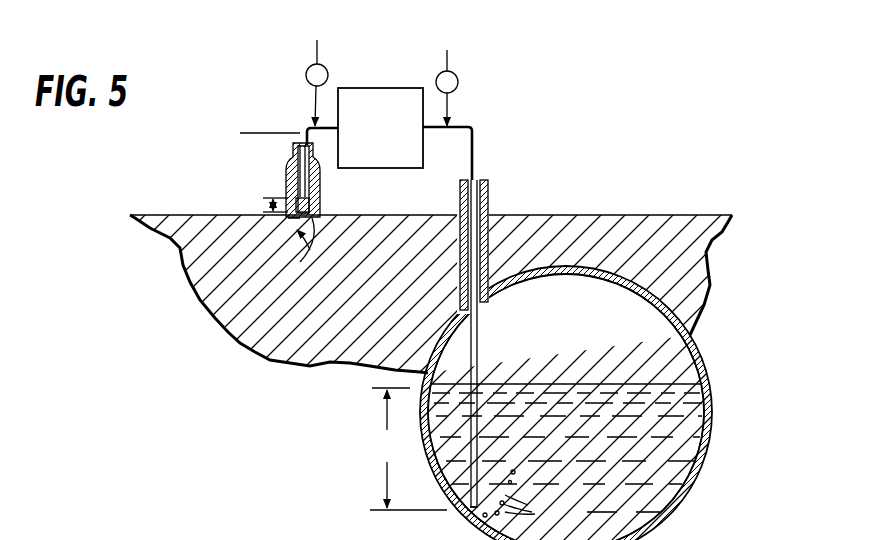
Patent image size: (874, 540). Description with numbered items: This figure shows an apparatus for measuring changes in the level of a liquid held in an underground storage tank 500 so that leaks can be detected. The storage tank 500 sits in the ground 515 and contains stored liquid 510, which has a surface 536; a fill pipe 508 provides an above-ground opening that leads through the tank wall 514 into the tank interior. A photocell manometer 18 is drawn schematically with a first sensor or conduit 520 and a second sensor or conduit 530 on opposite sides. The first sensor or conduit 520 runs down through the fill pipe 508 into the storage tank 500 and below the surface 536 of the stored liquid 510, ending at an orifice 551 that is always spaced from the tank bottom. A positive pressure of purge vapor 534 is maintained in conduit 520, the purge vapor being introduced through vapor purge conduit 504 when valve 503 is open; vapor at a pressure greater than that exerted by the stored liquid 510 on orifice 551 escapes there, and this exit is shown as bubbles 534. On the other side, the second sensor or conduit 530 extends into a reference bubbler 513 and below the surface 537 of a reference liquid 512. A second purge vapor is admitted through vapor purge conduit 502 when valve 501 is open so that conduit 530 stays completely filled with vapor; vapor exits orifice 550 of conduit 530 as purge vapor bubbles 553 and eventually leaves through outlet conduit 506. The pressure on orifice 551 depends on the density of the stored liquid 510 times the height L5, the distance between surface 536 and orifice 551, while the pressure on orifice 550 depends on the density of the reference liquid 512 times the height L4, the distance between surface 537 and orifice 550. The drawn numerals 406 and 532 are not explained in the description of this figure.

The photocell manometer 18 is at (393, 131).
The liquid (partially shown) 406 is at (281, 531).
The storage tank 500 is at (722, 430).
The valve 501 is at (308, 68).
The vapor purge conduit 502 is at (316, 120).
The valve 503 is at (453, 72).
The vapor purge conduit 504 is at (450, 102).
The outlet conduit 506 is at (265, 132).
The fill pipe 508 is at (488, 179).
The stored liquid 510 is at (660, 459).
The reference liquid 512 is at (298, 221).
The reference bubbler 513 is at (284, 171).
The wall 514 is at (662, 528).
The ground 515 is at (332, 288).
The first sensor or conduit 520 is at (478, 138).
The second sensor or conduit 530 is at (305, 124).
The soil boundary 532 is at (222, 324).
The purge vapor 534 is at (530, 498).
The surface 536 is at (637, 383).
The surface 537 is at (321, 190).
The orifice 550 is at (302, 229).
The orifice 551 is at (473, 509).
The purge vapor bubbles 553 is at (290, 218).
The height L4 is at (262, 205).
The height L5 is at (408, 449).